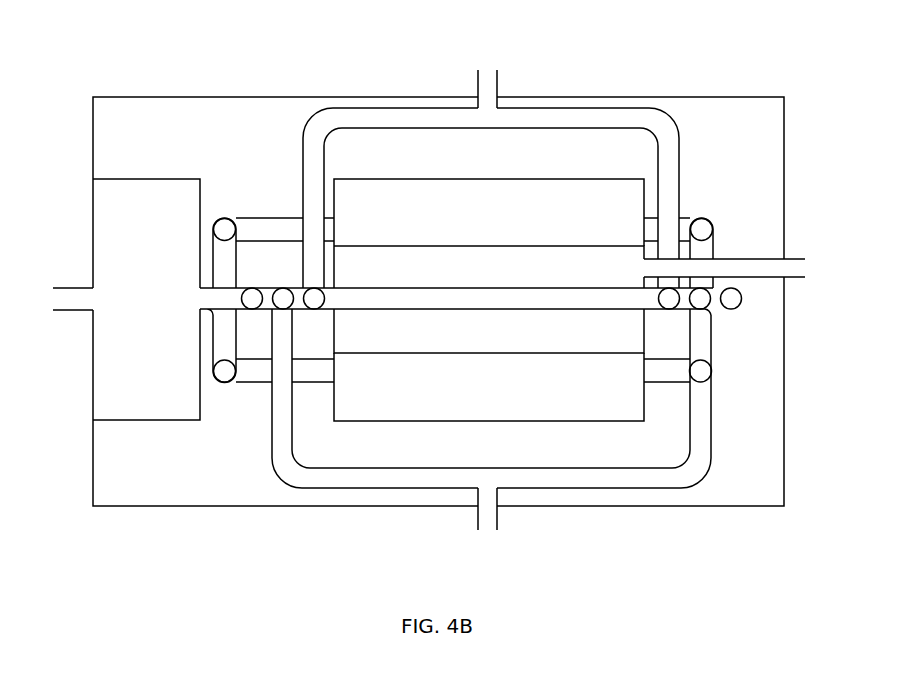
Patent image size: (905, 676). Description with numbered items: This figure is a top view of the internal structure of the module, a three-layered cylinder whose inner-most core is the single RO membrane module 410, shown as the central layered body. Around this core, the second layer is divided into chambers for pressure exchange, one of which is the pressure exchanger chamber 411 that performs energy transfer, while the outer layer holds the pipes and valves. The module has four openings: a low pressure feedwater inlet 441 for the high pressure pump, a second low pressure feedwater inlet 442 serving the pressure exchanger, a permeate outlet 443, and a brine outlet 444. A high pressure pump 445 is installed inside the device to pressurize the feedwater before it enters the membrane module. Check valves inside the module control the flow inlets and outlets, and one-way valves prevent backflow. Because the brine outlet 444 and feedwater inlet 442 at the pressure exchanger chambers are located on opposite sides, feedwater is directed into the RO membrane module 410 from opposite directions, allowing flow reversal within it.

The RO membrane module 410 is at (489, 299).
The pressure exchanger chamber 411 is at (489, 300).
The low pressure feedwater inlet for the high pressure pump 441 is at (56, 301).
The low pressure feedwater inlet for the pressure exchanger 442 is at (488, 524).
The permeate outlet 443 is at (747, 268).
The brine outlet 444 is at (487, 72).
The high pressure pump 445 is at (146, 299).